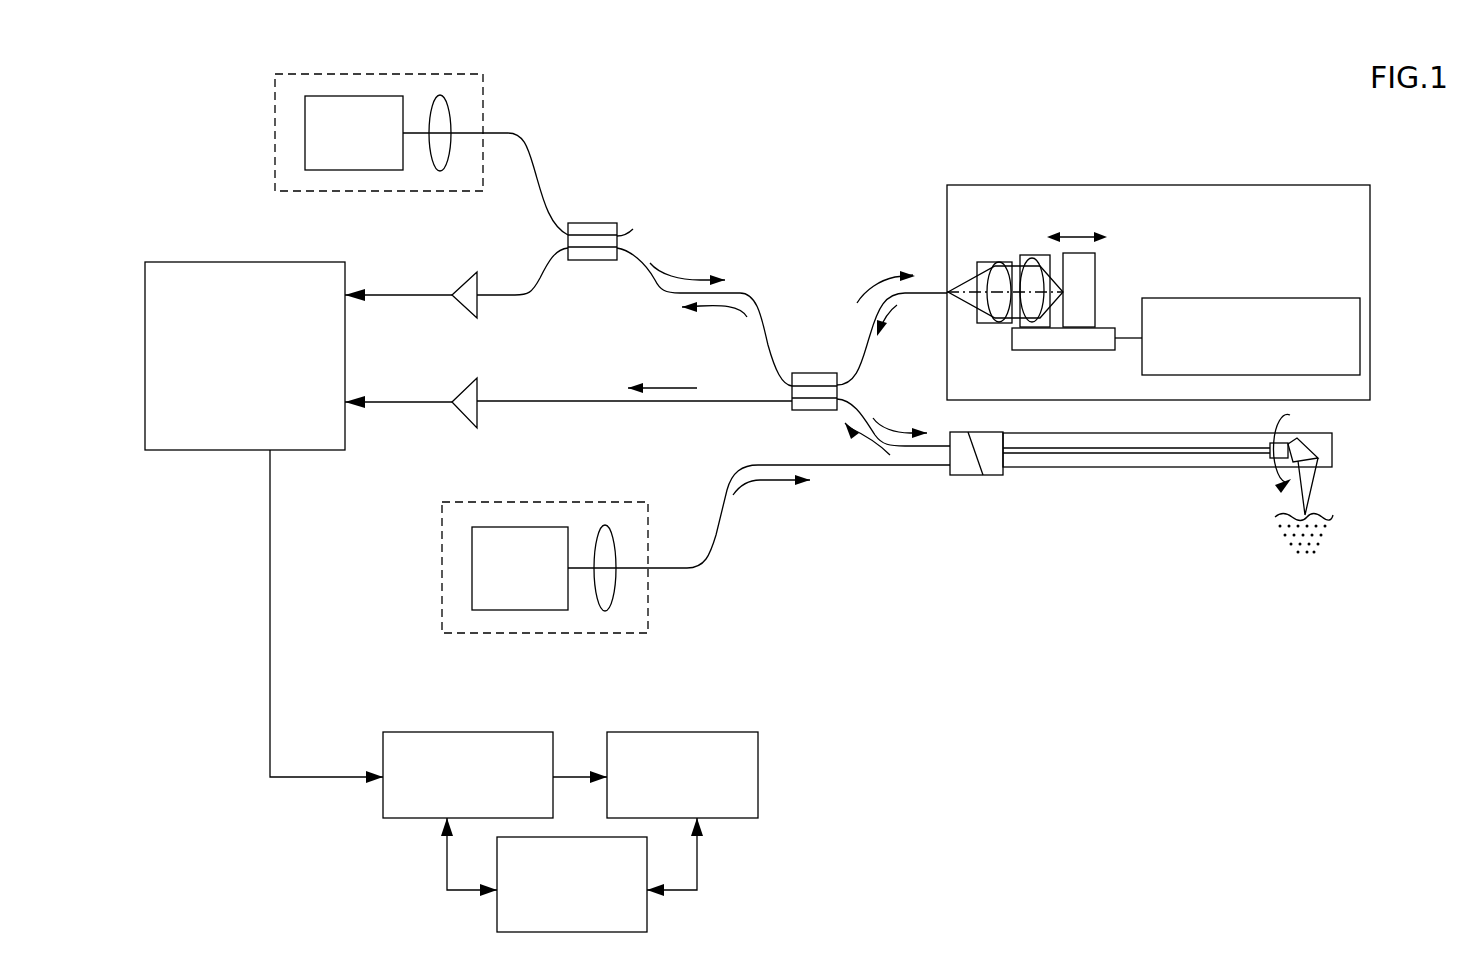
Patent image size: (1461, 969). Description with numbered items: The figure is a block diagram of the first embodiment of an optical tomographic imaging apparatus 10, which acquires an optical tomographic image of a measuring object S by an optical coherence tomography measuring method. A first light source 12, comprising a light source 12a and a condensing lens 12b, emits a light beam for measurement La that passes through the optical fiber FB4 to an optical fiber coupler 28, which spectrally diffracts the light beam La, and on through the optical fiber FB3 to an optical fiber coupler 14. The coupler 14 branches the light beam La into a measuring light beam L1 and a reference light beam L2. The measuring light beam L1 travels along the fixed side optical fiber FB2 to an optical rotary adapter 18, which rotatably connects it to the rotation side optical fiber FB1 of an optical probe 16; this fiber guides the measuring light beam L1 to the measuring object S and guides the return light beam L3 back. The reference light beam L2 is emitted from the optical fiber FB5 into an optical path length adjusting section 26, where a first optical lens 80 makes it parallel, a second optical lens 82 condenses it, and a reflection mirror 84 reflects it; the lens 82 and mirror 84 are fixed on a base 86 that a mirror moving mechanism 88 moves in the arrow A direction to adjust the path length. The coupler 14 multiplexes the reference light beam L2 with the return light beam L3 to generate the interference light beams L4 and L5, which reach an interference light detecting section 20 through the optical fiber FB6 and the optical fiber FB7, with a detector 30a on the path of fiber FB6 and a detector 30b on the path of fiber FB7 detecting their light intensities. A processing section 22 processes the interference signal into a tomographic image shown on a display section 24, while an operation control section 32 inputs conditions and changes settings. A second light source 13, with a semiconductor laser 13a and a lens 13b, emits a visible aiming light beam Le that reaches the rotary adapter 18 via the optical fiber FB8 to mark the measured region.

The optical tomographic imaging apparatus 10 is at (857, 147).
The first light source 12 is at (485, 88).
The light source 12a is at (305, 132).
The lens 12b is at (432, 167).
The second light source 13 is at (546, 502).
The semiconductor laser 13a is at (472, 578).
The lens 13b is at (605, 612).
The optical fiber coupler 14 is at (800, 411).
The optical probe 16 is at (1122, 480).
The optical rotary adapter 18 is at (963, 475).
The interference light detecting section 20 is at (226, 450).
The processing section 22 is at (457, 732).
The display section 24 is at (712, 732).
The optical path length adjusting section 26 is at (1270, 185).
The optical fiber coupler 28 is at (598, 261).
The detecting section 30a is at (478, 299).
The detecting section 30b is at (478, 395).
The operation control section 32 is at (647, 913).
The first optical lens 80 is at (1001, 262).
The second optical lens 82 is at (1028, 258).
The reflection mirror 84 is at (1096, 262).
The base 86 is at (1078, 350).
The mirror moving mechanism 88 is at (1263, 298).
The rotation side optical fiber FB1 is at (1196, 458).
The fixed side optical fiber FB2 is at (937, 442).
The optical fiber FB3 is at (766, 352).
The optical fiber FB4 is at (537, 192).
The optical fiber FB5 is at (933, 290).
The optical fiber FB6 is at (502, 292).
The optical fiber FB7 is at (583, 400).
The optical fiber FB8 is at (858, 466).
The light beam for measurement La is at (687, 268).
The aiming light beam Le is at (771, 499).
The measuring light beam L1 is at (900, 416).
The reference light beam L2 is at (881, 299).
The return light beam L3 is at (848, 445).
The interference light beam L4 is at (714, 324).
The interference light beam L5 is at (662, 375).
The arrow A direction A is at (1085, 230).
The measuring object S is at (1325, 510).